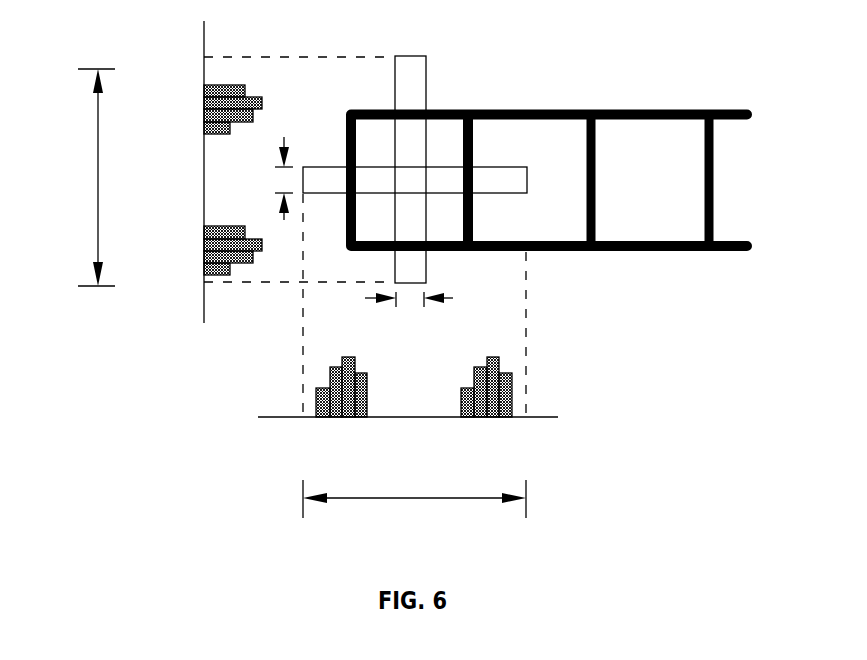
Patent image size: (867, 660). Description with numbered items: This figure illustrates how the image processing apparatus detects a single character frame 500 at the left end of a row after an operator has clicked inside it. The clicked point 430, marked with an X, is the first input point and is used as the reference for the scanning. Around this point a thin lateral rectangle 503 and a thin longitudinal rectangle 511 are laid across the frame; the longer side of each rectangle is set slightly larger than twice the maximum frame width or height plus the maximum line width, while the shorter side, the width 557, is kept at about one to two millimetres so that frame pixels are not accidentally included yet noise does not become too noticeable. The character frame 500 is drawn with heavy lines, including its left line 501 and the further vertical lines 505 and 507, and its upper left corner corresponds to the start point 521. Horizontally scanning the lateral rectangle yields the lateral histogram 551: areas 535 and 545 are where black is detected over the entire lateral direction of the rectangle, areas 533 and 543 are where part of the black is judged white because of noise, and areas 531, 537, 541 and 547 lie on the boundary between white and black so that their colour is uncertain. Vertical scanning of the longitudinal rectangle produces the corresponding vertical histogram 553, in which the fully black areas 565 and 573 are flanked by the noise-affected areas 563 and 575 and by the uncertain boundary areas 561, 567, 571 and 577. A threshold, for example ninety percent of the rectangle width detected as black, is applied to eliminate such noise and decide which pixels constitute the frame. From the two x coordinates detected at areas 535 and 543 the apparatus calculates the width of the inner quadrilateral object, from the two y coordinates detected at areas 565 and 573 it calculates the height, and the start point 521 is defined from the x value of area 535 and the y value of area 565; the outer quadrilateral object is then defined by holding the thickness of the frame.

The center point X of pixel 430 is at (420, 173).
The character frame 500 is at (680, 109).
The grid line 501 is at (346, 228).
The horizontal scan line segment 503 is at (473, 226).
The grid line 505 is at (596, 225).
The grid line 507 is at (705, 175).
The vertical scan line segment 511 is at (433, 108).
The start point 521 is at (363, 108).
The boundary area 531 is at (334, 417).
The noise area 533 is at (342, 417).
The full black area 535 is at (348, 417).
The boundary area 537 is at (355, 417).
The boundary area 541 is at (479, 417).
The noise area 543 is at (487, 417).
The full black area 545 is at (496, 417).
The boundary area 547 is at (500, 417).
The lateral histogram 551 is at (414, 506).
The vertical spacing distance 553 is at (79, 177).
The line width 557 is at (343, 238).
The histogram bin 561 is at (204, 90).
The histogram bin 563 is at (204, 107).
The full black area 565 is at (204, 122).
The histogram bin 567 is at (204, 137).
The histogram bin 571 is at (204, 228).
The full black area 573 is at (204, 244).
The histogram bin 575 is at (204, 258).
The histogram bin 577 is at (204, 273).